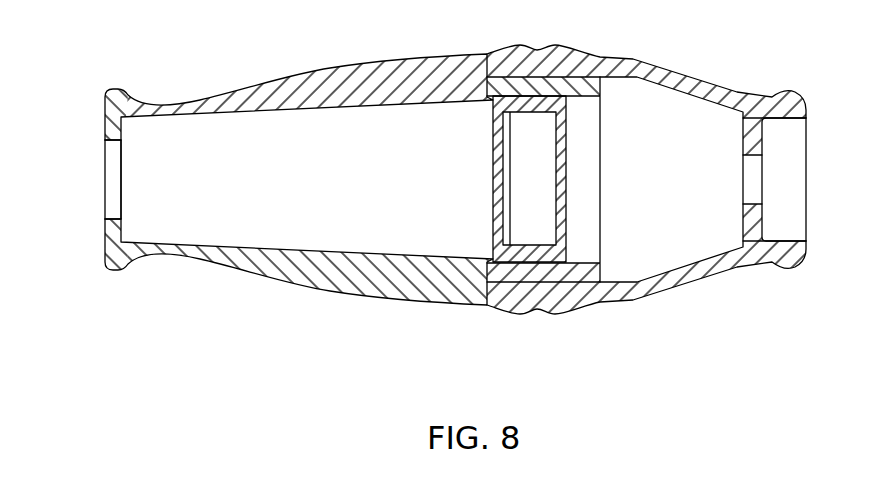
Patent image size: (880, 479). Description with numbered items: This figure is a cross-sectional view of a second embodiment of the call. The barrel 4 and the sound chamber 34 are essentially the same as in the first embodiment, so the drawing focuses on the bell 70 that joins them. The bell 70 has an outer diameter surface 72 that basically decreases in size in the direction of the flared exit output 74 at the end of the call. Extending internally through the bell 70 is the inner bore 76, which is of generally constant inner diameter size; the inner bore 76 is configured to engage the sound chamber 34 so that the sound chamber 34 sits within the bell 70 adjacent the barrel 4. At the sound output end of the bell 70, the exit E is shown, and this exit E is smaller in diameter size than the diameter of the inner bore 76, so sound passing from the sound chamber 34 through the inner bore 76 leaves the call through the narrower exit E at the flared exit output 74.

The barrel 4 is at (690, 83).
The sound chamber 34 is at (491, 163).
The bell 70 is at (218, 100).
The outer diameter surface 72 is at (300, 73).
The flared exit output 74 is at (122, 268).
The inner bore 76 is at (373, 252).
The exit E is at (112, 178).